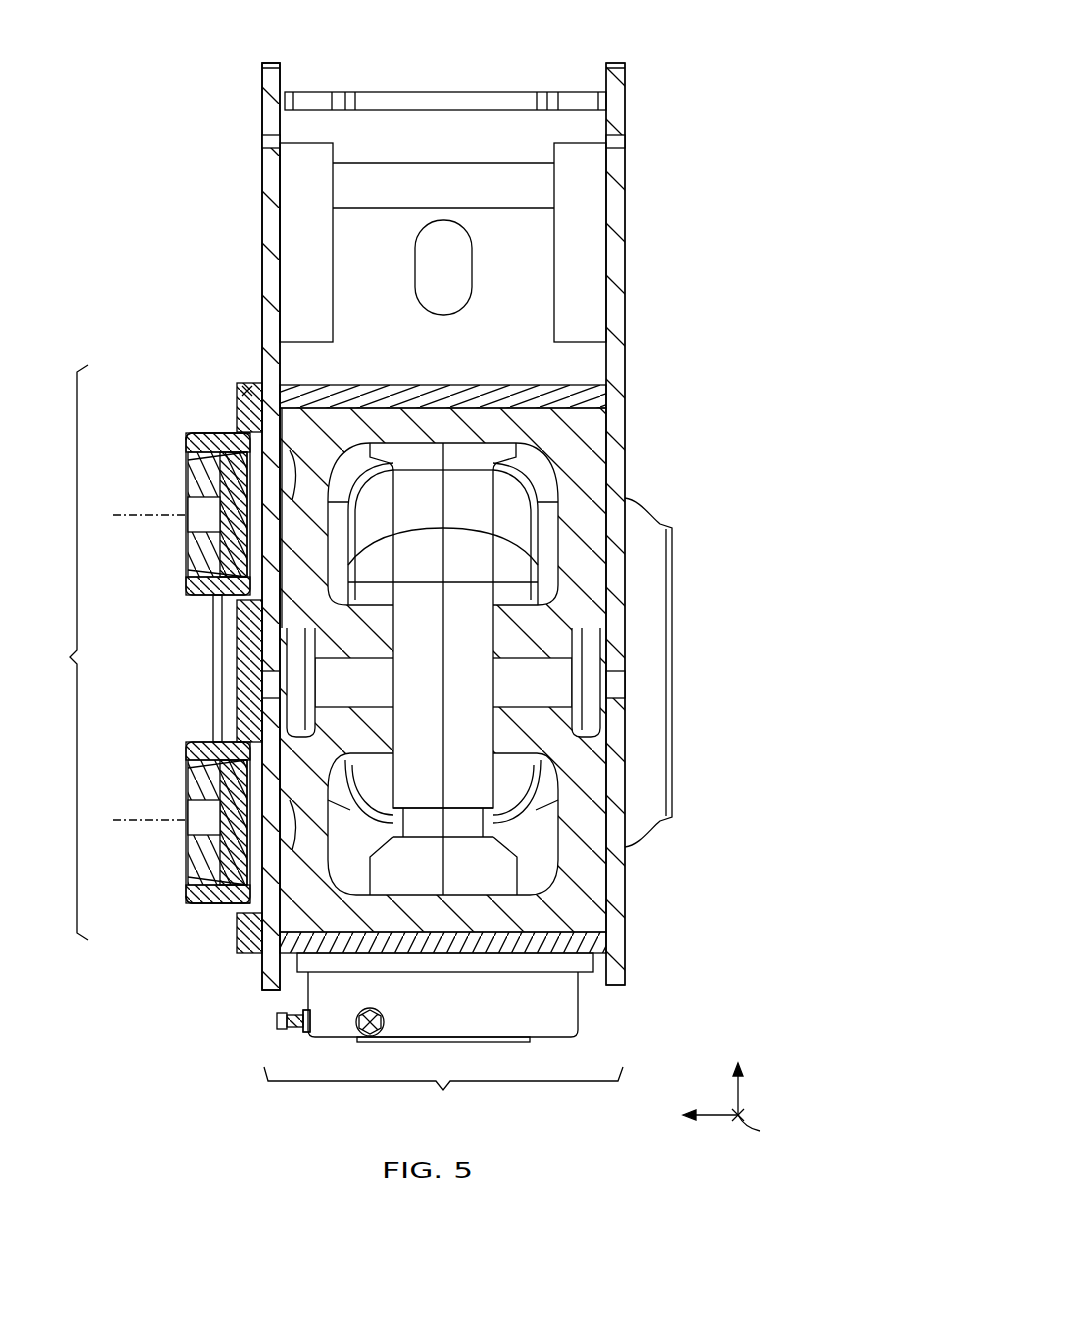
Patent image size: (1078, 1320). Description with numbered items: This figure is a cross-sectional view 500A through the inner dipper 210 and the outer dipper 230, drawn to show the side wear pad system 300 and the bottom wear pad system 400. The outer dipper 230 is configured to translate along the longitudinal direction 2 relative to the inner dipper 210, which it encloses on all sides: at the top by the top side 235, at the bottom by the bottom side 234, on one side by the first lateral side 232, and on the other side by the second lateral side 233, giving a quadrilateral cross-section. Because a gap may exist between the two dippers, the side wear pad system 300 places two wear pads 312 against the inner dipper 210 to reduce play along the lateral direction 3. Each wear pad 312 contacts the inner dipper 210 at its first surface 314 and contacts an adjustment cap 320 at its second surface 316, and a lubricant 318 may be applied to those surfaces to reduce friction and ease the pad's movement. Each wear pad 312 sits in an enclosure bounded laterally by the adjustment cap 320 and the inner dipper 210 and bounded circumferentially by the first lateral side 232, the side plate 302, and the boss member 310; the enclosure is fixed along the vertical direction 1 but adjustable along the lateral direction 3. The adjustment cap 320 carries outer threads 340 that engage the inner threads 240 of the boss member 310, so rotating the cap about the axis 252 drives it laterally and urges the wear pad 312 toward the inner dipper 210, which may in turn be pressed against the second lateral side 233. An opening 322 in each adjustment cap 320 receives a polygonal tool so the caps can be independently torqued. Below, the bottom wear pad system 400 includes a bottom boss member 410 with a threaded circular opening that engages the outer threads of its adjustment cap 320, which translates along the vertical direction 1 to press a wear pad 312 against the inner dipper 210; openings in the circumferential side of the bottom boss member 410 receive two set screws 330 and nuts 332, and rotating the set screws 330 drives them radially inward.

The damper assembly 500A is at (638, 54).
The outer dipper 230 is at (262, 235).
The first lateral side 232 is at (268, 282).
The second lateral side 233 is at (625, 239).
The top side 235 is at (470, 392).
The bottom side 234 is at (555, 945).
The inner dipper 210 is at (580, 458).
The first surface 314 is at (292, 500).
The lubricant 318 is at (262, 452).
The side wear pad system 300 is at (57, 652).
The side plate 302 is at (245, 390).
The axis 252 is at (155, 515).
The boss member 310 is at (200, 595).
The outer threads 340 is at (215, 460).
The adjustment cap 320 is at (208, 560).
The wear pad 312 is at (232, 550).
The second surface 316 is at (200, 478).
The opening 322 is at (195, 510).
The inner threads 240 is at (195, 440).
The bottom wear pad system 400 is at (443, 1093).
The bottom boss member 410 is at (562, 1012).
The set screws 330 is at (277, 1020).
The nuts 332 is at (300, 1010).
The vertical direction 1 is at (738, 1095).
The longitudinal direction 2 is at (760, 1132).
The lateral direction 3 is at (715, 1116).